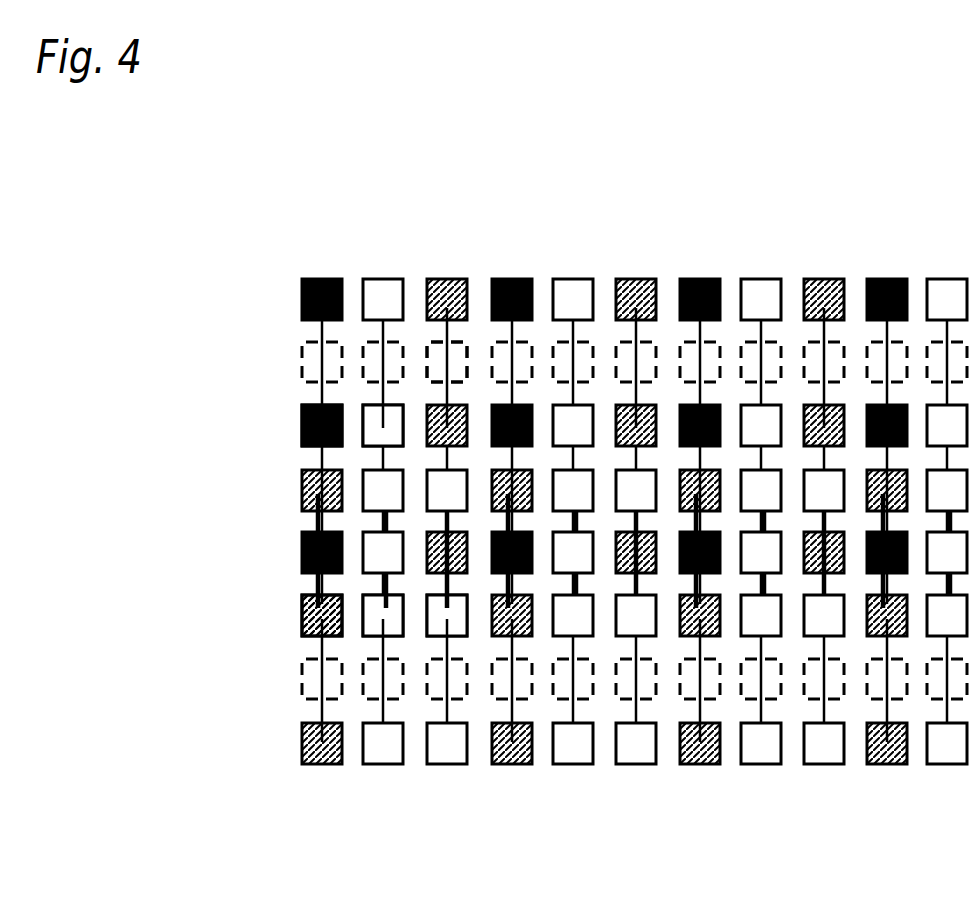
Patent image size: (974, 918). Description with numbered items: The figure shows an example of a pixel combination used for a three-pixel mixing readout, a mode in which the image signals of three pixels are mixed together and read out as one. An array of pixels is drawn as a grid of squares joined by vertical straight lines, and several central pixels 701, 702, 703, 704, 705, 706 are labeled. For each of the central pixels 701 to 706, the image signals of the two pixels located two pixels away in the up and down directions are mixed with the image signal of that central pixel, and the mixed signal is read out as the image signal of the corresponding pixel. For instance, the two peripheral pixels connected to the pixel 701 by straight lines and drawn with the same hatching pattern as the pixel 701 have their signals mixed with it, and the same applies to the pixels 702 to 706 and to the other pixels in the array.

The pixel 701 is at (304, 407).
The pixel 702 is at (379, 409).
The pixel 703 is at (446, 379).
The pixel 704 is at (335, 637).
The pixel 705 is at (395, 637).
The pixel 706 is at (455, 637).